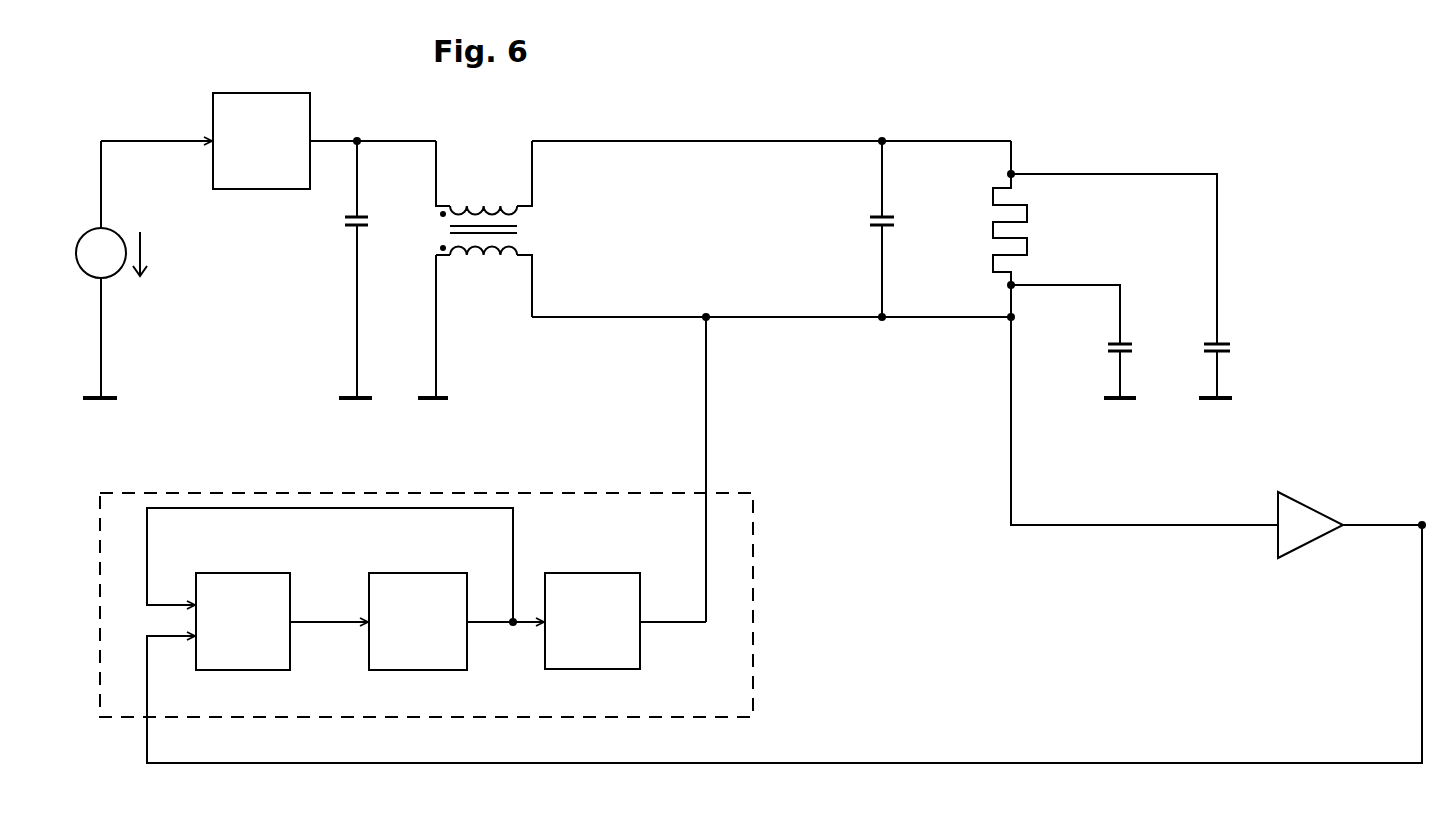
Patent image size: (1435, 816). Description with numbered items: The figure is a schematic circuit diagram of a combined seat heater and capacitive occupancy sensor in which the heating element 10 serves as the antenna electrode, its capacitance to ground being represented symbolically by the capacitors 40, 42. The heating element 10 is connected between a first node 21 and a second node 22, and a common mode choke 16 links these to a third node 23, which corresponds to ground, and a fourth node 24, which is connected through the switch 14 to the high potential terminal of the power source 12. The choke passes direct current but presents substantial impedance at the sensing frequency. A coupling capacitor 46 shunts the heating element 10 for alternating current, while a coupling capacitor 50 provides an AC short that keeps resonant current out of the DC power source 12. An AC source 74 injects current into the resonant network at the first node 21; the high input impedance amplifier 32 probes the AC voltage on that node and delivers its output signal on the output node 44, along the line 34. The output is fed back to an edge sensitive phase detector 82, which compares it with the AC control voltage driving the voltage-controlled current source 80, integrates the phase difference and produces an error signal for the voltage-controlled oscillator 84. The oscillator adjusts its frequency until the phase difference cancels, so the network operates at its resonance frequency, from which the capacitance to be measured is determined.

The heating element 10 is at (1028, 215).
The power source 12 is at (118, 229).
The switch 14 is at (250, 190).
The common mode choke 16 is at (486, 205).
The first node 21 is at (720, 316).
The second node 22 is at (622, 145).
The third node 23 is at (437, 312).
The fourth node 24 is at (438, 205).
The high input impedance amplifier 32 is at (1305, 500).
The output line 34 is at (1135, 520).
The capacitor 40 is at (1138, 342).
The capacitor 42 is at (1203, 350).
The output node 44 is at (1368, 530).
The coupling capacitor 46 is at (897, 217).
The coupling capacitor 50 is at (345, 222).
The AC source 74 is at (756, 537).
The voltage-controlled current source 80 is at (598, 563).
The edge sensitive phase detector 82 is at (255, 572).
The voltage-controlled oscillator 84 is at (418, 572).